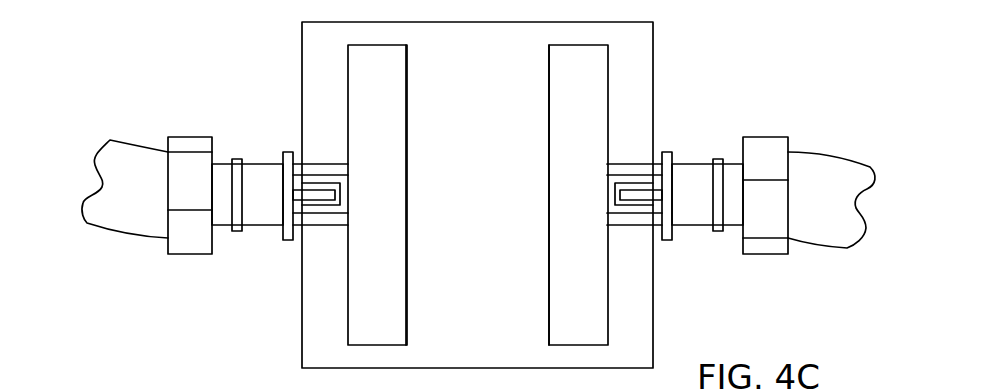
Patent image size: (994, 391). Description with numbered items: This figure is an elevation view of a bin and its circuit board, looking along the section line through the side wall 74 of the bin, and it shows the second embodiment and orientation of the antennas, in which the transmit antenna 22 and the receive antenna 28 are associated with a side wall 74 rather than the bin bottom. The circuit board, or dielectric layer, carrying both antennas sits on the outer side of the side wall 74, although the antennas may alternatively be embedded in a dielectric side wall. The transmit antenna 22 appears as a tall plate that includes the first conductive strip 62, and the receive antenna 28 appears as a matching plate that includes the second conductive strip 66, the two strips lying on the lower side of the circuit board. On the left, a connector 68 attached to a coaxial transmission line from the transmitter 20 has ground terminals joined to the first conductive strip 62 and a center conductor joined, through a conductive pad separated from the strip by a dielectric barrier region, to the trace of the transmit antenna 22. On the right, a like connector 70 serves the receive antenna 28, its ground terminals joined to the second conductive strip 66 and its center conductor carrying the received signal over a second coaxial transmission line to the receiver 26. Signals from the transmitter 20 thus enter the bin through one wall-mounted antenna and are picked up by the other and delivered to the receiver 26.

The transmitter 20 is at (87, 178).
The transmit antenna 22 is at (377, 89).
The receiver 26 is at (863, 212).
The receive antenna 28 is at (578, 90).
The first conductive strip 62 is at (383, 172).
The second conductive strip 66 is at (572, 175).
The connector 68 is at (257, 165).
The outlet fitting 70 is at (698, 162).
The side wall 74 is at (452, 225).